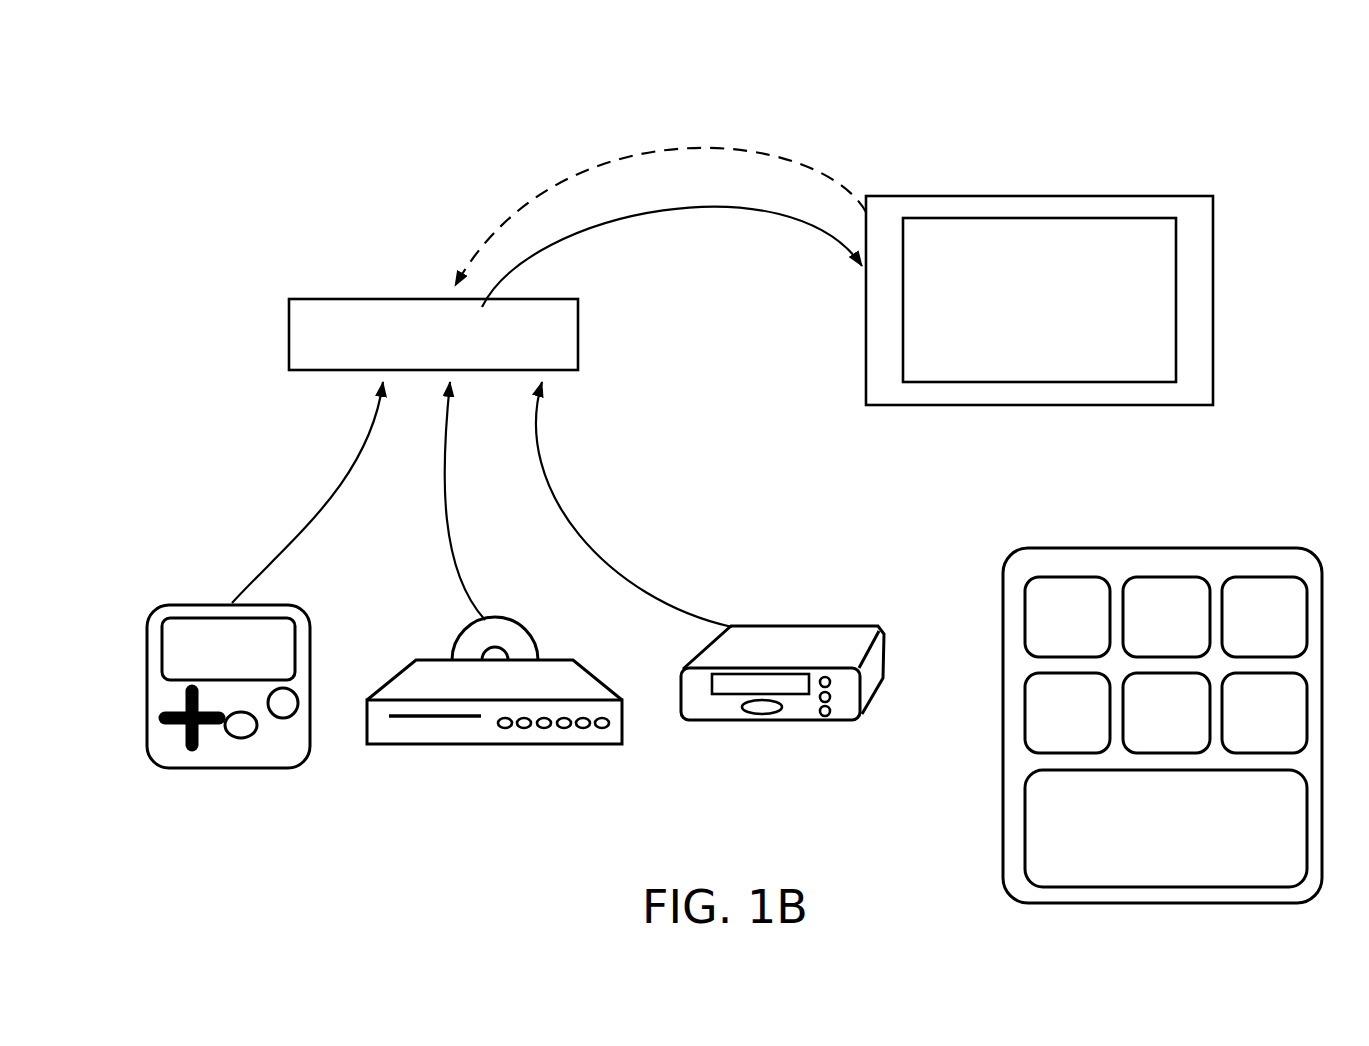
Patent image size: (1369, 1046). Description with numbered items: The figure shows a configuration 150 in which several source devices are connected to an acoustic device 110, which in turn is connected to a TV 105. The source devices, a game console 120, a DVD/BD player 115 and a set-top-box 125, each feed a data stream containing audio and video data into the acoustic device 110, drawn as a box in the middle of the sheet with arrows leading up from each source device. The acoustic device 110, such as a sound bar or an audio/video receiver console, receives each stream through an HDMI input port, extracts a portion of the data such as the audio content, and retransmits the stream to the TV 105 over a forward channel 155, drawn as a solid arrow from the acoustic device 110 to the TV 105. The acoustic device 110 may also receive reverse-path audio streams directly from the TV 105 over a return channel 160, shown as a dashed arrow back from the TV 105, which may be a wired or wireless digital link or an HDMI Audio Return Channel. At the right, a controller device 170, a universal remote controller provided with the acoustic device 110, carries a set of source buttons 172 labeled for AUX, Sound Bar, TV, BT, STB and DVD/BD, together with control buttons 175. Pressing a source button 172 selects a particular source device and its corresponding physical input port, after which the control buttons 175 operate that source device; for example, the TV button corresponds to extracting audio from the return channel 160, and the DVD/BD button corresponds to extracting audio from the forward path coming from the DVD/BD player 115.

The TV 105 is at (1014, 311).
The acoustic device 110 is at (433, 334).
The DVD/BD player 115 is at (405, 671).
The game console 120 is at (278, 768).
The set-top-box 125 is at (840, 623).
The configuration 150 is at (1039, 222).
The forward channel 155 is at (672, 257).
The return channel 160 is at (660, 194).
The controller device 170 is at (1120, 732).
The source button 172 is at (997, 557).
The control buttons 175 is at (1125, 868).